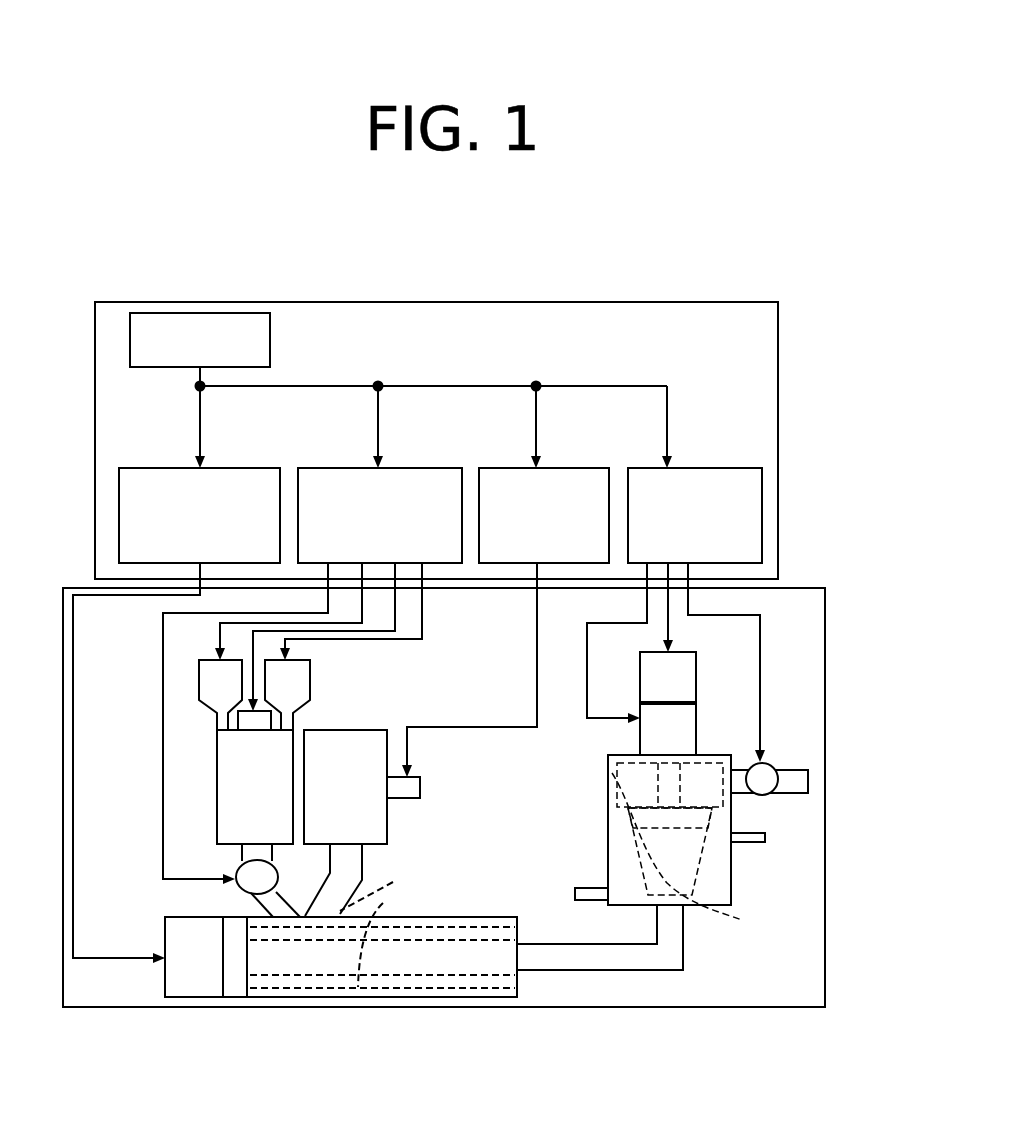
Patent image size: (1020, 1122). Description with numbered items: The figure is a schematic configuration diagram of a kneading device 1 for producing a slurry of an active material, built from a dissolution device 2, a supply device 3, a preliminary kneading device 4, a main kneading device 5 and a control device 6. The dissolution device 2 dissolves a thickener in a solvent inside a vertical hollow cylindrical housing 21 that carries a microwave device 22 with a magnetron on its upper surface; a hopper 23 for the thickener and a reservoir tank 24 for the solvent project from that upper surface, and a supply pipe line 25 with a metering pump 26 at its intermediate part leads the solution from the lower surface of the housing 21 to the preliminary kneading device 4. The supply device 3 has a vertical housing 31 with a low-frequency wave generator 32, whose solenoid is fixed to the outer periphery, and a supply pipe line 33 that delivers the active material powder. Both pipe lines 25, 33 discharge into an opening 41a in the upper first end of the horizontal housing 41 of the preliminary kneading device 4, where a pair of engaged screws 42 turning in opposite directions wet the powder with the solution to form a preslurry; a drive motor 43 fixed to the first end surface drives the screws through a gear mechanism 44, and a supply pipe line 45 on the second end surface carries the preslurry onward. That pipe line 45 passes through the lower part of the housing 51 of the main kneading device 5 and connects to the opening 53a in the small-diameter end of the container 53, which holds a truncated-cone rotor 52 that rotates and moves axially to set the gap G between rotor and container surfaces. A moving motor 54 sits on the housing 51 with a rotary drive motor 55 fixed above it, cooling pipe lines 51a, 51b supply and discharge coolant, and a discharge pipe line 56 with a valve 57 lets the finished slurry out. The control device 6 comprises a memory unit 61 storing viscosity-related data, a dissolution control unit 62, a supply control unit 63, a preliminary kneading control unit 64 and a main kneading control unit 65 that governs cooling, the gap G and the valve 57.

The kneading device 1 is at (517, 252).
The control device 6 is at (436, 424).
The memory unit 61 is at (270, 339).
The dissolution control unit 62 is at (410, 466).
The supply control unit 63 is at (553, 466).
The preliminary kneading control unit 64 is at (238, 466).
The main kneading control unit 65 is at (703, 466).
The dissolution device 2 is at (206, 743).
The housing 21 is at (283, 737).
The microwave device 22 is at (258, 711).
The hopper 23 is at (213, 663).
The reservoir tank 24 is at (297, 662).
The supply pipe line 25 is at (278, 893).
The metering pump 26 is at (240, 872).
The supply device 3 is at (393, 710).
The housing 31 is at (355, 735).
The low-frequency wave generator 32 is at (422, 773).
The supply pipe line 33 is at (355, 862).
The preliminary kneading device 4 is at (482, 892).
The housing 41 is at (428, 915).
The opening 41a is at (391, 891).
The pair of screws 42 is at (392, 941).
The drive motor 43 is at (185, 920).
The gear mechanism 44 is at (237, 920).
The supply pipe line 45 is at (532, 952).
The main kneading device 5 is at (568, 737).
The housing 51 is at (717, 753).
The cooling pipe line 51a is at (587, 887).
The cooling pipe line 51b is at (752, 843).
The rotor 52 is at (617, 773).
The container 53 is at (612, 826).
The opening 53a is at (702, 869).
The moving motor 54 is at (640, 745).
The rotary drive motor 55 is at (673, 652).
The discharge pipe line 56 is at (797, 768).
The valve 57 is at (765, 762).
The gap G is at (632, 815).